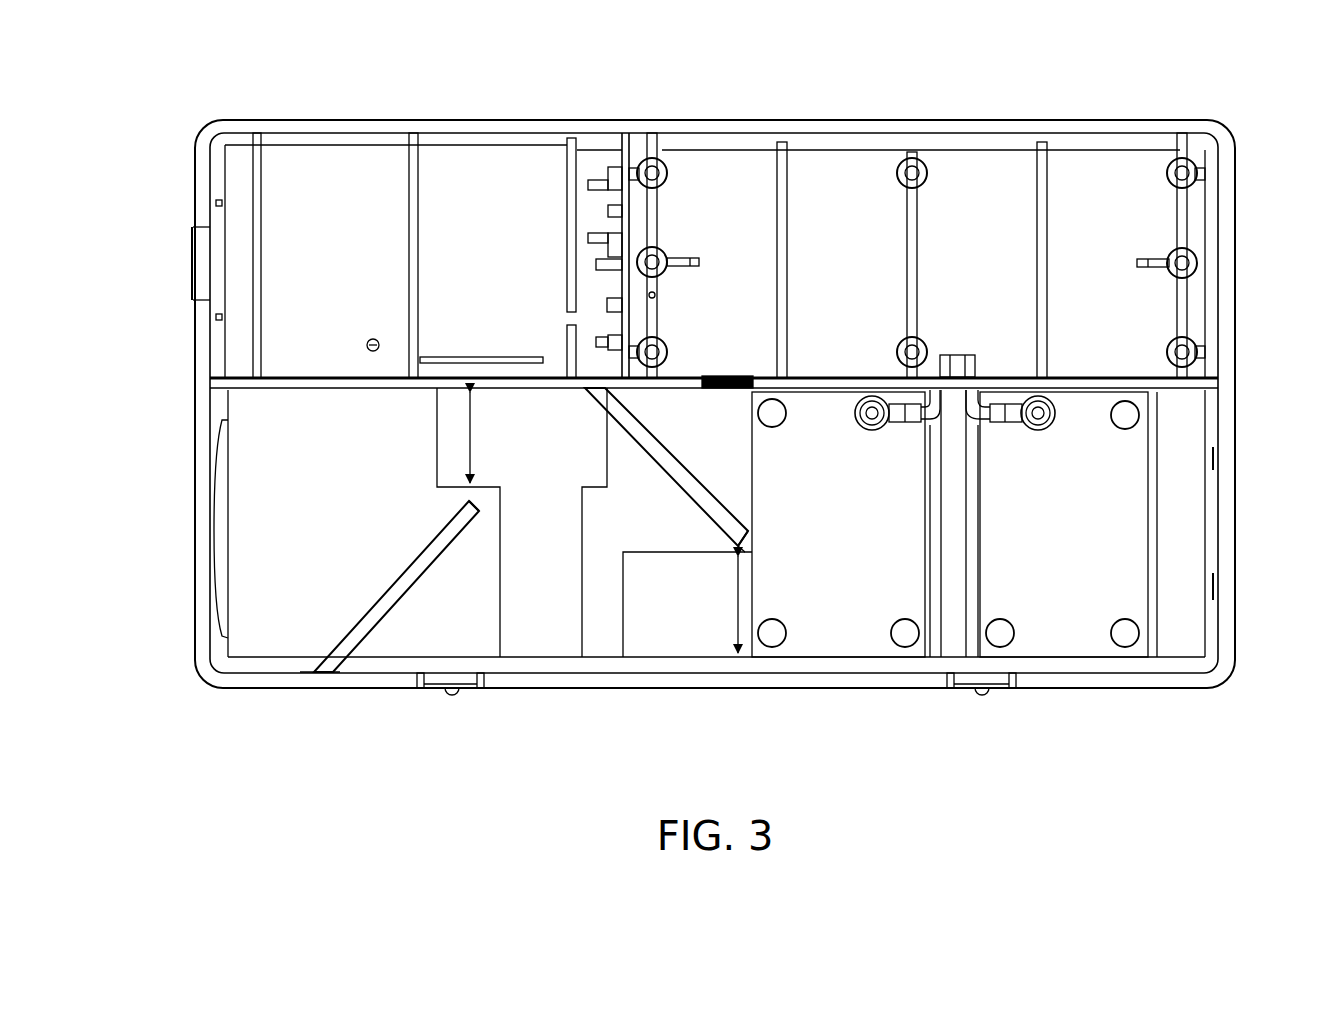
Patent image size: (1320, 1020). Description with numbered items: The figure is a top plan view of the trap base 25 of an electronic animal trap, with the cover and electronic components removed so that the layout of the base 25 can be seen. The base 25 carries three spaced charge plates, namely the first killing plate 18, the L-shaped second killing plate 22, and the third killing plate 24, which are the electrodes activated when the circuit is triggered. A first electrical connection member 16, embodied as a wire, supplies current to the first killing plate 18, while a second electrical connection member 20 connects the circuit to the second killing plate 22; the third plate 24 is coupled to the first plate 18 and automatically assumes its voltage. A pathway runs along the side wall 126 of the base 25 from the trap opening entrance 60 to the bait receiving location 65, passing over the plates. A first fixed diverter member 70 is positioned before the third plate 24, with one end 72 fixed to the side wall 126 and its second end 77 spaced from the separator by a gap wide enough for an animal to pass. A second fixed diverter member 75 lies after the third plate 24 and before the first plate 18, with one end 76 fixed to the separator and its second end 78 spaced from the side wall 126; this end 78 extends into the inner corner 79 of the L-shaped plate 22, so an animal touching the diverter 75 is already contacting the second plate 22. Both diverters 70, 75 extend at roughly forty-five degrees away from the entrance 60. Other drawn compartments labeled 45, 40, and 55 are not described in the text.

The trap opening entrance 60 is at (186, 540).
The first compartment 45 is at (465, 275).
The second compartment 40 is at (837, 275).
The third killing plate 24 is at (527, 543).
The second killing plate 22 is at (814, 571).
The first killing plate 18 is at (1055, 543).
The first fixed barrier or diverter member 70 is at (368, 612).
The second end of first diverter 77 is at (468, 500).
The first end of first diverter 72 is at (308, 668).
The second fixed barrier or diverter member 75 is at (654, 440).
The first end of second diverter 76 is at (585, 392).
The second end of second diverter 78 is at (743, 535).
The inner corner 79 is at (748, 552).
The first electrical connection member 16 is at (932, 440).
The second electrical connection member 20 is at (975, 430).
The central divider 55 is at (952, 630).
The trap base 25 is at (710, 678).
The side wall 126 is at (332, 680).
The bait receiving location 65 is at (1186, 636).